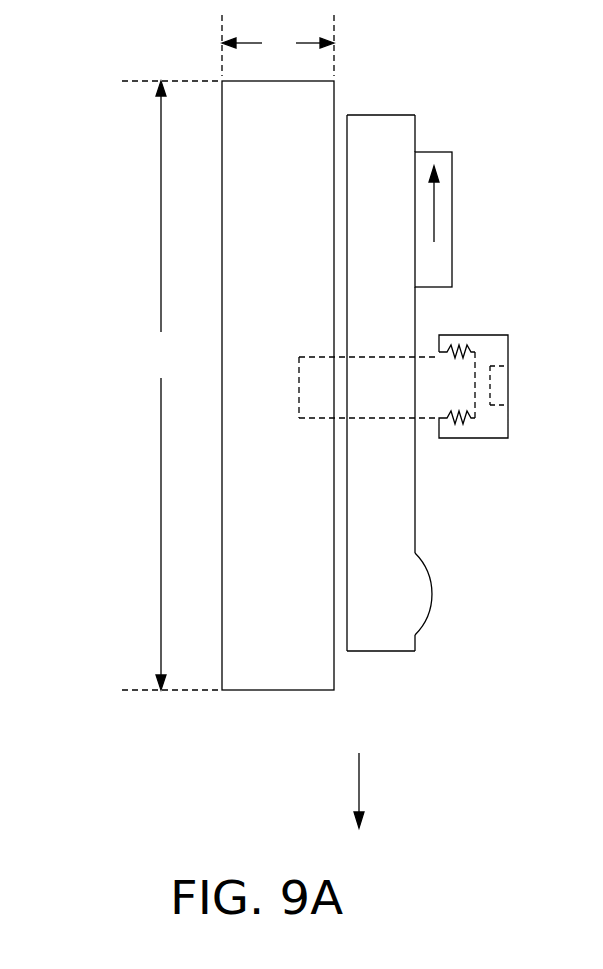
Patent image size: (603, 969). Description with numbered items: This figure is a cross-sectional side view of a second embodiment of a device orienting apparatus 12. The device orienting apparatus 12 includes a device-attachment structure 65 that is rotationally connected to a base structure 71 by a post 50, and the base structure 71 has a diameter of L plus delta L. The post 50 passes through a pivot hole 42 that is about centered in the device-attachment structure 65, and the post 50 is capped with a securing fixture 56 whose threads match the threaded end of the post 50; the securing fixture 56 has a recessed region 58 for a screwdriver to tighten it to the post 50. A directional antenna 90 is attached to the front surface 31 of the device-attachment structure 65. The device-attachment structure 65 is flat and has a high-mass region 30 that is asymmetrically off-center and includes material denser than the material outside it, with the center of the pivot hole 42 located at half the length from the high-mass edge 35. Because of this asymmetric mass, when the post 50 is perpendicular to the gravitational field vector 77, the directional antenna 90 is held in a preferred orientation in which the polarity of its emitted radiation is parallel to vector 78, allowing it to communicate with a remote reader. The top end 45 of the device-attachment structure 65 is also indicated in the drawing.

The device orienting apparatus 12 is at (332, 435).
The high-mass region 30 is at (415, 383).
The front surface 31 is at (416, 133).
The high-mass edge 35 is at (377, 652).
The pivot hole 42 is at (403, 420).
The top end 45 is at (392, 114).
The post 50 is at (318, 403).
The securing fixture 56 is at (485, 345).
The recessed region 58 is at (497, 387).
The device-attachment structure 65 is at (400, 517).
The base structure 71 is at (283, 692).
The gravitational field vector 77 is at (360, 790).
The preferred orientation vector 78 is at (434, 217).
The directional antenna 90 is at (445, 272).